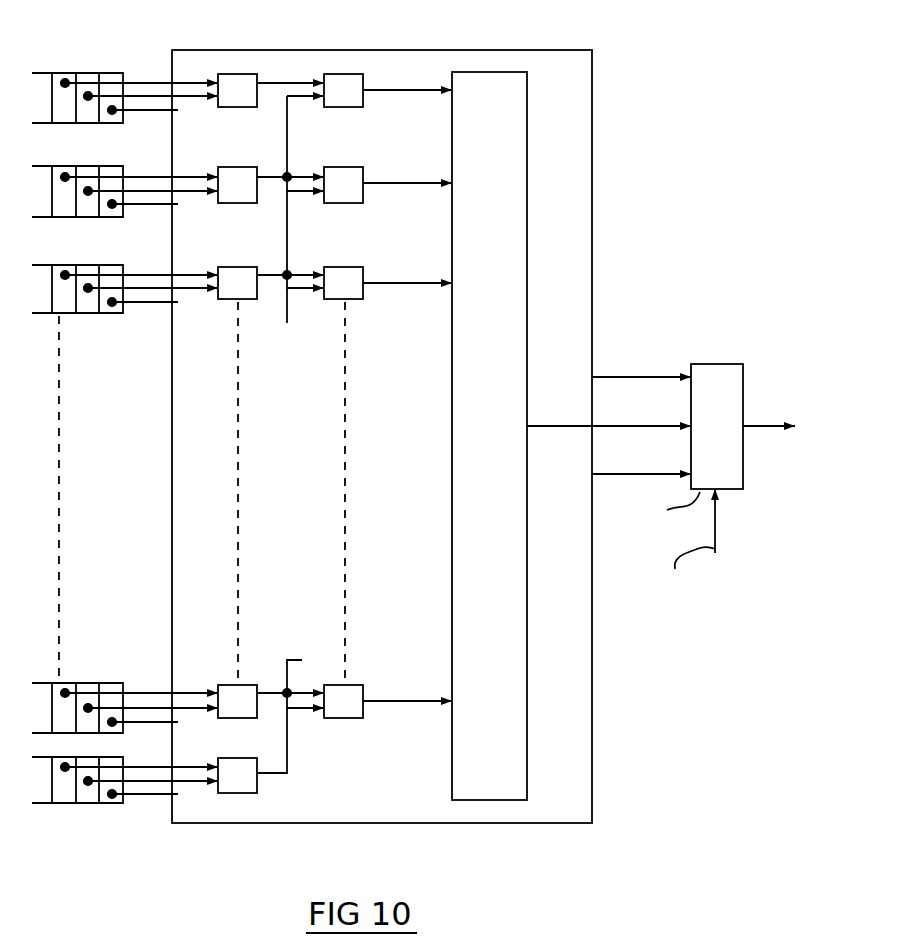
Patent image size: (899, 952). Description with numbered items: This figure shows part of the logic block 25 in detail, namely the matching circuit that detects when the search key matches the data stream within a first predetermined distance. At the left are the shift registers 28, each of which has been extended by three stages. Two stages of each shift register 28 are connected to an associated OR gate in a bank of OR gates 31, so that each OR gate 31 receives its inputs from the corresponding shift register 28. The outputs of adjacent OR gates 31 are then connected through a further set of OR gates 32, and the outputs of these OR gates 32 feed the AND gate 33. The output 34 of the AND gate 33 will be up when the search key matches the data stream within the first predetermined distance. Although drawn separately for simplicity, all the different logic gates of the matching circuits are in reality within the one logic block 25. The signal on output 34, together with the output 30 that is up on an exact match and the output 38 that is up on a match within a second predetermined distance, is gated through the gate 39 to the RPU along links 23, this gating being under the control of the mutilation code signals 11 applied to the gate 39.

The shift register 28 is at (88, 56).
The OR gate 31 is at (241, 64).
The OR gate 32 is at (334, 65).
The logic block 25 is at (412, 13).
The AND gate 33 is at (527, 273).
The output 30 is at (645, 352).
The output 34 is at (645, 402).
The output 38 is at (645, 450).
The gate 39 is at (729, 363).
The link 23 is at (785, 409).
The mutilation code signal 11 is at (718, 524).